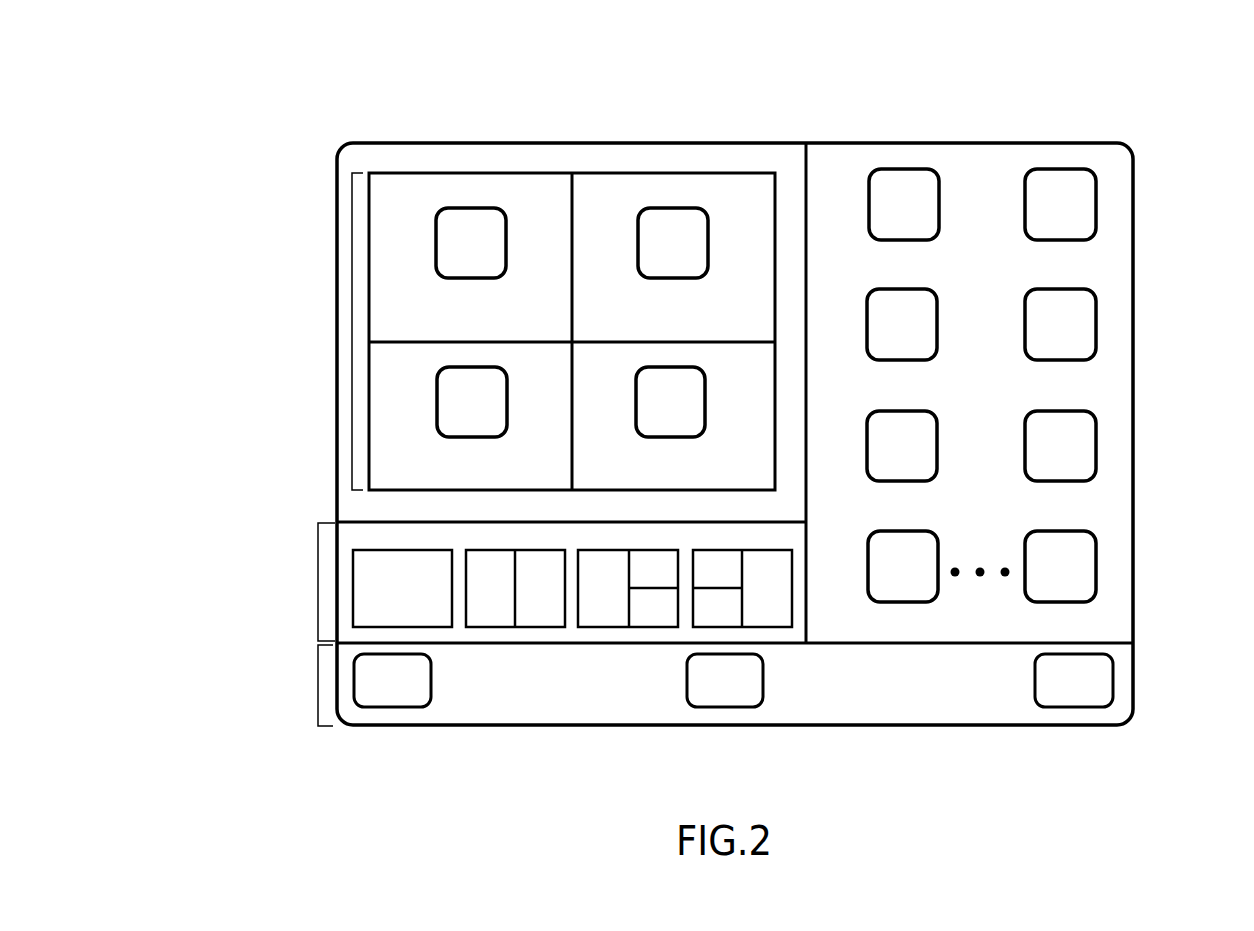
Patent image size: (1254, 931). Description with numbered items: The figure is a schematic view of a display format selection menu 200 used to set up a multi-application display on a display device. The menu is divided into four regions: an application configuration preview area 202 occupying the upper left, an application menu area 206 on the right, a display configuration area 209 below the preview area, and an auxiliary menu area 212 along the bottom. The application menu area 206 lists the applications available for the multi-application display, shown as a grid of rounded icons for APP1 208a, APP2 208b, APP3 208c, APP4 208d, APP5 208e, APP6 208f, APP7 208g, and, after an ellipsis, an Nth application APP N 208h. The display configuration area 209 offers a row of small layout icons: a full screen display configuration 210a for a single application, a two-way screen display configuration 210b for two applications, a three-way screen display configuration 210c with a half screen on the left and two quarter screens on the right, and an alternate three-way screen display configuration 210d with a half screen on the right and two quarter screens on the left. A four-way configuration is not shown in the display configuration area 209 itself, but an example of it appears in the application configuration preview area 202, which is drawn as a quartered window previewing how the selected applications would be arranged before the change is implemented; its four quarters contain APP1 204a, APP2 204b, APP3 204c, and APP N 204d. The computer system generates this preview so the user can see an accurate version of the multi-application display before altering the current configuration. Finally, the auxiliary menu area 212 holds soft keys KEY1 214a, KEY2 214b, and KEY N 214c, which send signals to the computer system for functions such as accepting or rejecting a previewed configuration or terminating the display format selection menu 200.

The display format selection menu 200 is at (154, 43).
The application configuration preview area 202 is at (352, 342).
The APP1 preview window 204a is at (444, 232).
The APP2 preview window 204b is at (646, 232).
The APP3 preview window 204c is at (445, 391).
The APPN preview window 204d is at (645, 391).
The application menu area 206 is at (1105, 603).
The APP1 application 208a is at (869, 205).
The APP2 application 208b is at (1025, 205).
The APP3 application 208c is at (867, 325).
The APP4 application 208d is at (1025, 325).
The APP5 application 208e is at (867, 447).
The APP6 application 208f is at (1025, 447).
The APP7 application 208g is at (868, 567).
The APP N application 208h is at (1025, 567).
The display configuration area 209 is at (318, 588).
The full screen display configuration 210a is at (402, 575).
The two-way screen display configuration 210b is at (515, 575).
The three-way screen display configuration 210c is at (628, 575).
The alternate three-way screen display configuration 210d is at (742, 575).
The auxiliary menu area 212 is at (318, 680).
The soft key KEY1 214a is at (431, 681).
The soft key KEY2 214b is at (763, 681).
The soft key KEY N 214c is at (1113, 681).